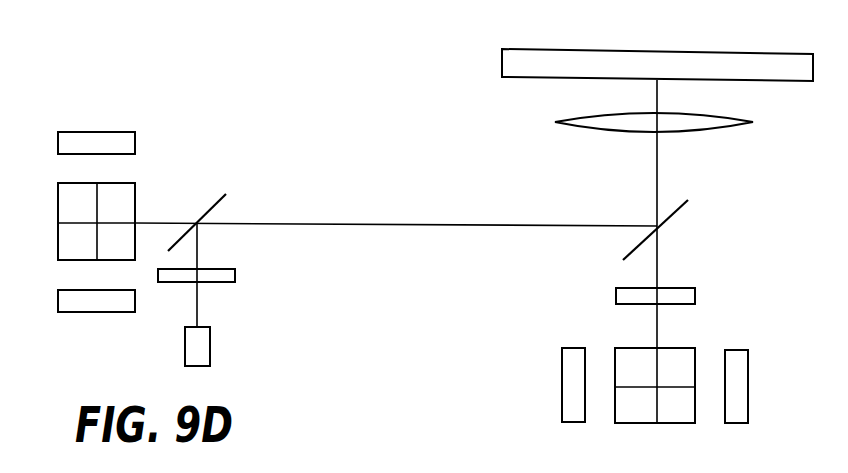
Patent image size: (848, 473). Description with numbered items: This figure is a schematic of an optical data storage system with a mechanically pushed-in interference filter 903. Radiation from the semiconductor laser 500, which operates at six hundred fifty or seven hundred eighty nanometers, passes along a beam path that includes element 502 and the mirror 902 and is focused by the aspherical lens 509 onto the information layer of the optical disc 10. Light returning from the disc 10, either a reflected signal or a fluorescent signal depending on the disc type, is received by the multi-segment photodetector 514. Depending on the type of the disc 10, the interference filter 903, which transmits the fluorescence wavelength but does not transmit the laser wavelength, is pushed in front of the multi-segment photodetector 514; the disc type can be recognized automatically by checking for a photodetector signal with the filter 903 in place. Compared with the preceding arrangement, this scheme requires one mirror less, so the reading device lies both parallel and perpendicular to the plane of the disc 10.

The optical disc 10 is at (480, 72).
The aspherical lens 509 is at (753, 128).
The mirror 902 is at (682, 210).
The interference filter 903 is at (697, 298).
The collimator lens 502 is at (237, 273).
The semiconductor laser 500 is at (209, 338).
The multi-segment photodetector 514 is at (58, 247).